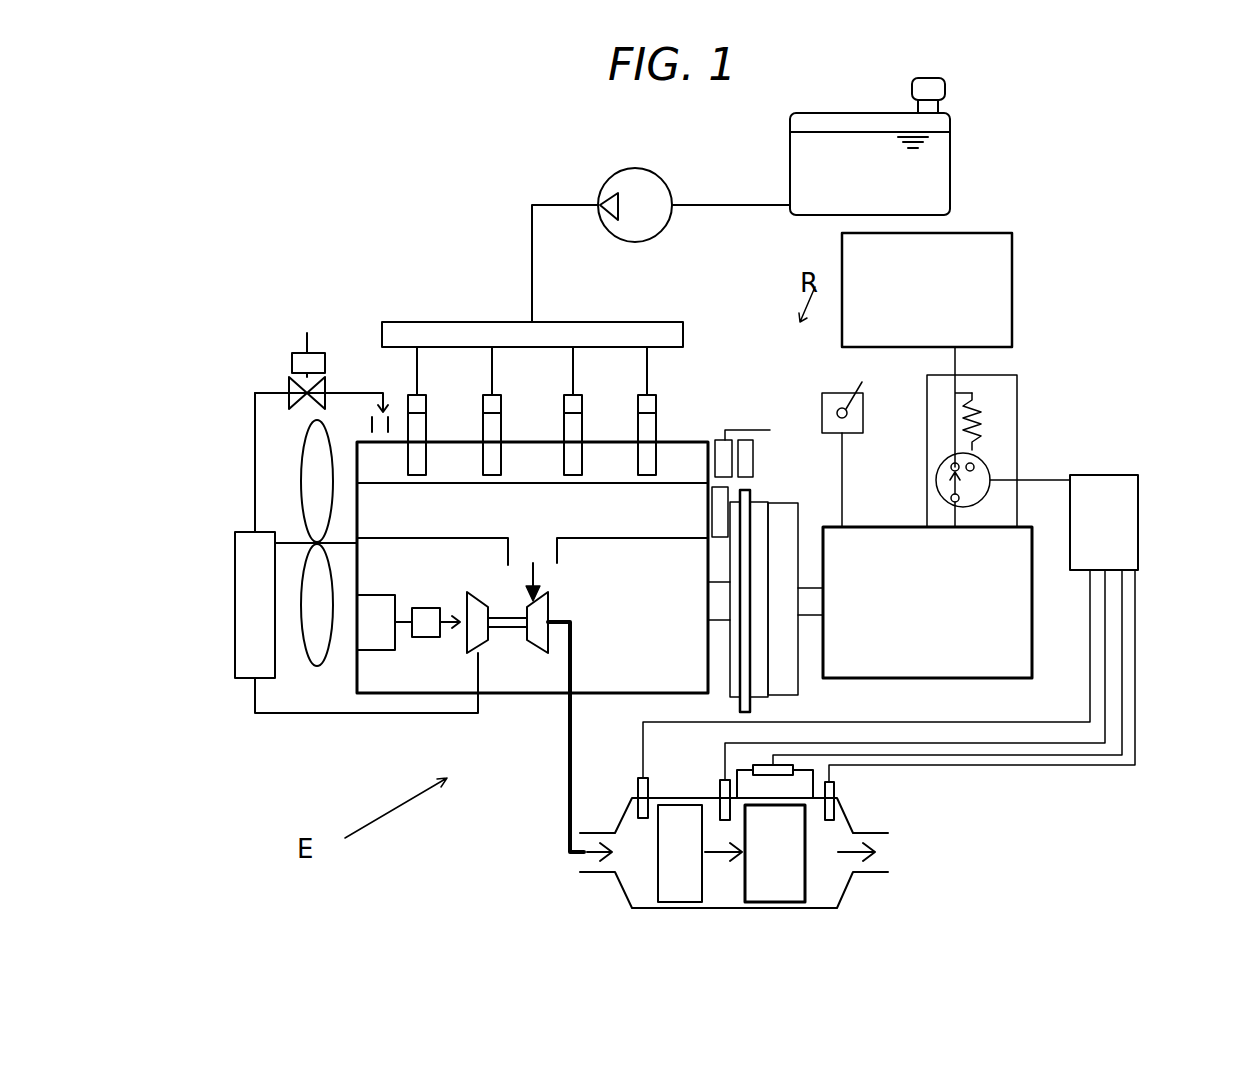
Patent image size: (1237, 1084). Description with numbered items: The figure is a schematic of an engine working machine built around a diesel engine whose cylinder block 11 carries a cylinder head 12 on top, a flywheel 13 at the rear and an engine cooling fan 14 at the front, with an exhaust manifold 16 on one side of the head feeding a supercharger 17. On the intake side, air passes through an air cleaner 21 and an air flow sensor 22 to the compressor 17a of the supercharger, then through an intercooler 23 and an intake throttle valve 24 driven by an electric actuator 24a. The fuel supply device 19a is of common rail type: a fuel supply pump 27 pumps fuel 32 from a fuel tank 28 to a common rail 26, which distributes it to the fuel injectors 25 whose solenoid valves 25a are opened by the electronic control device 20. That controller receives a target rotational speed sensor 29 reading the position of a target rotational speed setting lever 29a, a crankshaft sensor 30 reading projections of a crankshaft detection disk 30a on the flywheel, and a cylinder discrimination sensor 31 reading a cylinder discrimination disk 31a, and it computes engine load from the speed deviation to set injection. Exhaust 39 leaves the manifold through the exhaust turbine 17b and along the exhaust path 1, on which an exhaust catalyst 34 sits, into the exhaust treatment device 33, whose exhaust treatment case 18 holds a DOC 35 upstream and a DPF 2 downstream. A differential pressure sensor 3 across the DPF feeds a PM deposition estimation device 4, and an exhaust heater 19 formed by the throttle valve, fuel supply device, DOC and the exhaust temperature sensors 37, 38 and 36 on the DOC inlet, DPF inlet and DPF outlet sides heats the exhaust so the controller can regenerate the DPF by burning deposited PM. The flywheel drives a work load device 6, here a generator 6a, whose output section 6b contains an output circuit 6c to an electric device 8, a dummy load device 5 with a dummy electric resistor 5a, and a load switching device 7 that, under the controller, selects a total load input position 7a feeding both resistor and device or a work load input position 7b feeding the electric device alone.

The exhaust path 1 is at (561, 817).
The DPF 2 is at (775, 890).
The differential pressure sensor 3 is at (765, 765).
The PM deposition estimation device 4 is at (1118, 475).
The dummy load device 5 is at (1022, 418).
The dummy electric resistor 5a is at (978, 420).
The work load device 6 is at (957, 602).
The generator 6a is at (1000, 560).
The output section 6b is at (1005, 505).
The output circuit 6c is at (955, 418).
The load switching device 7 is at (972, 479).
The total load input position 7a is at (975, 468).
The work load input position 7b is at (951, 467).
The electric device 8 is at (985, 285).
The cylinder block 11 is at (607, 672).
The cylinder head 12 is at (700, 445).
The flywheel 13 is at (755, 530).
The engine cooling fan 14 is at (318, 440).
The exhaust manifold 16 is at (403, 528).
The supercharger 17 is at (483, 673).
The compressor 17a is at (468, 640).
The exhaust turbine 17b is at (545, 648).
The exhaust treatment case 18 is at (750, 845).
The exhaust heater 19 is at (577, 512).
The fuel supply device 19a is at (577, 512).
The electronic control device 20 is at (906, 596).
The air cleaner 21 is at (375, 640).
The air flow sensor 22 is at (428, 615).
The intercooler 23 is at (265, 642).
The intake throttle valve 24 is at (314, 366).
The electric actuator 24a is at (290, 392).
The fuel injector 25 is at (493, 396).
The solenoid valve 25a is at (647, 403).
The common rail 26 is at (458, 330).
The fuel supply pump 27 is at (642, 182).
The fuel tank 28 is at (904, 146).
The target rotational speed sensor 29 is at (854, 438).
The target rotational speed setting lever 29a is at (848, 408).
The crankshaft sensor 30 is at (745, 413).
The crankshaft detection disk 30a is at (755, 498).
The cylinder discrimination sensor 31 is at (723, 450).
The cylinder discrimination disk 31a is at (718, 522).
The fuel 32 is at (958, 157).
The exhaust treatment device 33 is at (705, 918).
The exhaust catalyst 34 is at (652, 883).
The DOC 35 is at (668, 882).
The exhaust temperature sensor on DPF outlet side 36 is at (835, 790).
The exhaust temperature sensor on DOC inlet side 37 is at (640, 795).
The exhaust temperature sensor on DPF inlet side 38 is at (720, 795).
The exhaust 39 is at (540, 575).